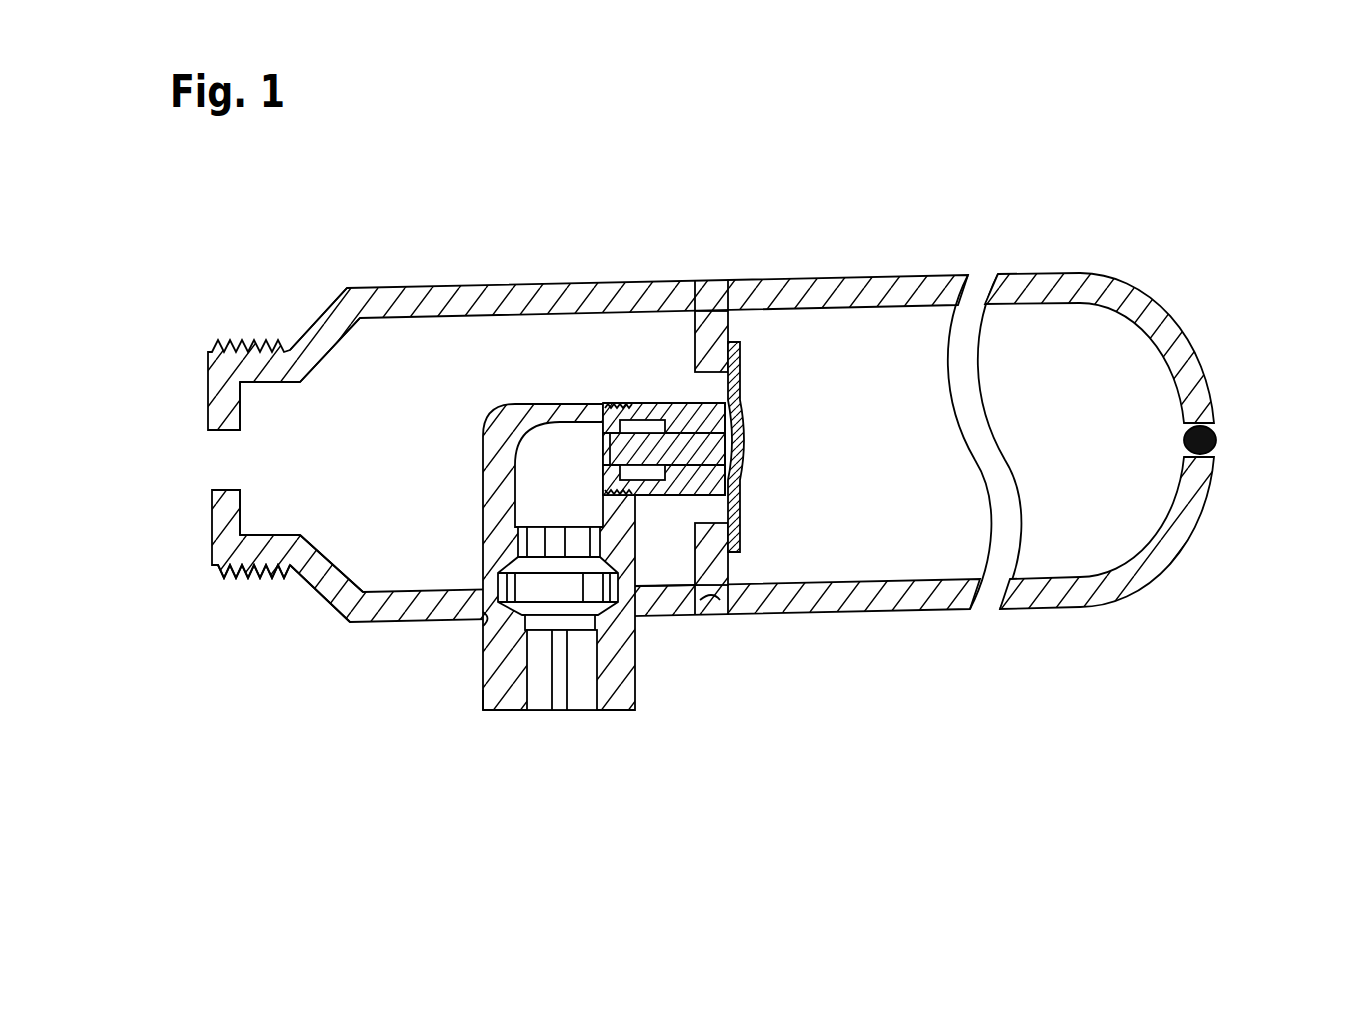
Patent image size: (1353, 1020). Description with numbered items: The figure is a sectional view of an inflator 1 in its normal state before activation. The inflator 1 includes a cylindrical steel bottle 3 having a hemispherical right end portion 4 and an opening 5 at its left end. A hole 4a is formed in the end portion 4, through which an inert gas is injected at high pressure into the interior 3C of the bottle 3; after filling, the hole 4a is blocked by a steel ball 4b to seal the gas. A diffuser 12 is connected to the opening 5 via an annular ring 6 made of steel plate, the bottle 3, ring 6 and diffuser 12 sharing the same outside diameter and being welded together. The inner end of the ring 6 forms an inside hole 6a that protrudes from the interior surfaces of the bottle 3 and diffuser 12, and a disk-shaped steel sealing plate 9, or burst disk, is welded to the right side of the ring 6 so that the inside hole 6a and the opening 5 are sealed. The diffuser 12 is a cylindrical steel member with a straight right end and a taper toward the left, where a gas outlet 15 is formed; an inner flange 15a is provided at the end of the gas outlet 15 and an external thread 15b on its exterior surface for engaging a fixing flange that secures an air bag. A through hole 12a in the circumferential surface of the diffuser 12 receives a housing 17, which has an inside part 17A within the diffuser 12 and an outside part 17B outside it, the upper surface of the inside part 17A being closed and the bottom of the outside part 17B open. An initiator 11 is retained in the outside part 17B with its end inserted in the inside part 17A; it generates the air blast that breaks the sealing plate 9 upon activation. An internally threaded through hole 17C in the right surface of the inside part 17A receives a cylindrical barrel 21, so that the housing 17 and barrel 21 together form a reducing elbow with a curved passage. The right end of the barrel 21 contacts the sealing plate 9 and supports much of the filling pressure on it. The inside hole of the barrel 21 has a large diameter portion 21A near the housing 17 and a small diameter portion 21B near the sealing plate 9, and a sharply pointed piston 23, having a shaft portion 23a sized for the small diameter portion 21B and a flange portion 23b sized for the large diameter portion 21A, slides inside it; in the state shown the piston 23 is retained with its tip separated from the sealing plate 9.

The inflator 1 is at (915, 139).
The cylindrical steel bottle 3 is at (913, 275).
The interior of the bottle 3C is at (882, 520).
The hemispherical right end portion 4 is at (1180, 326).
The hole 4a is at (1215, 432).
The steel ball 4b is at (1215, 449).
The opening 5 is at (708, 613).
The annular ring 6 is at (713, 613).
The inside hole 6a is at (725, 378).
The sealing plate 9 is at (737, 388).
The initiator 11 is at (545, 713).
The diffuser 12 is at (312, 324).
The through hole 12a is at (486, 630).
The gas outlet 15 is at (225, 460).
The inner flange 15a is at (222, 517).
The external thread 15b is at (250, 577).
The housing 17 is at (533, 394).
The inside part 17A is at (483, 457).
The outside part 17B is at (480, 685).
The through hole 17C is at (605, 470).
The barrel 21 is at (621, 396).
The large diameter portion 21A is at (650, 403).
The small diameter portion 21B is at (690, 403).
The piston 23 is at (710, 828).
The shaft portion 23a is at (657, 480).
The flange portion 23b is at (645, 480).